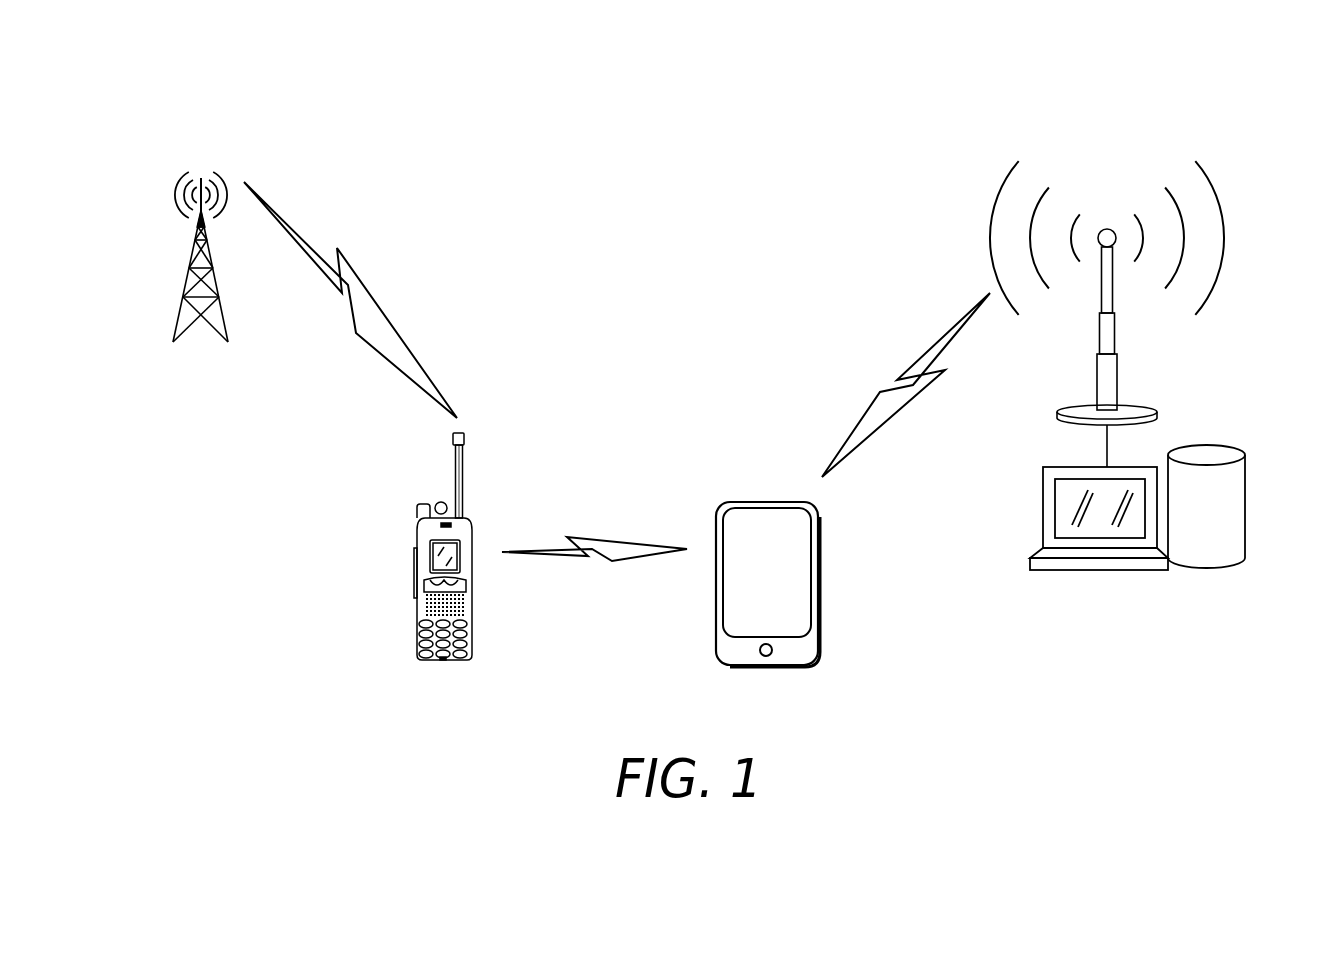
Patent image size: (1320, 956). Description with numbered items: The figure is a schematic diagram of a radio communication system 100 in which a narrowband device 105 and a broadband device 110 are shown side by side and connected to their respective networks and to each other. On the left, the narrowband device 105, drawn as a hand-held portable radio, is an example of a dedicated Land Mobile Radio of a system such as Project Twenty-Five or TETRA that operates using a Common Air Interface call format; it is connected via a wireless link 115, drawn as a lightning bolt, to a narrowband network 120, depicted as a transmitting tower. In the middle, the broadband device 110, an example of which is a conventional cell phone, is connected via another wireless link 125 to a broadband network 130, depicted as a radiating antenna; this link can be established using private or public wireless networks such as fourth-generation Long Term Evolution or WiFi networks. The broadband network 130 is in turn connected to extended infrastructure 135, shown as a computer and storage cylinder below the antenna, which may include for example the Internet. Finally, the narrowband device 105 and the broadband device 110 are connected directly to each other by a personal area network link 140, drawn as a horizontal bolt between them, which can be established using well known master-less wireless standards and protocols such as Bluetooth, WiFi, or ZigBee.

The radio communication system 100 is at (1242, 98).
The narrowband device 105 is at (403, 593).
The broadband device 110 is at (819, 583).
The wireless link 115 is at (365, 288).
The narrowband network 120 is at (176, 193).
The wireless link 125 is at (897, 377).
The broadband network 130 is at (1118, 370).
The extended infrastructure 135 is at (1100, 572).
The personal area network (PAN) link 140 is at (590, 563).